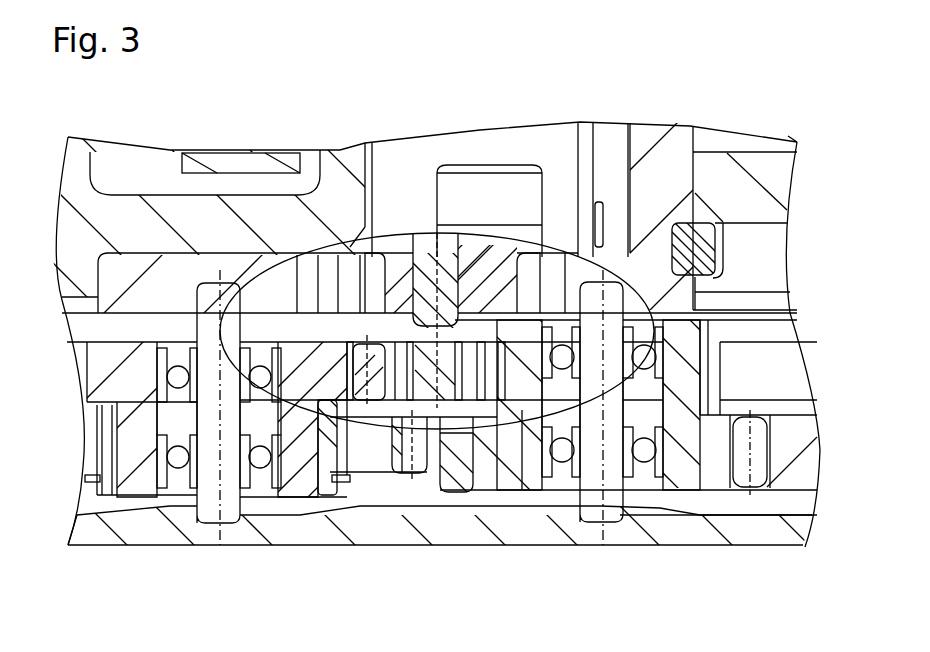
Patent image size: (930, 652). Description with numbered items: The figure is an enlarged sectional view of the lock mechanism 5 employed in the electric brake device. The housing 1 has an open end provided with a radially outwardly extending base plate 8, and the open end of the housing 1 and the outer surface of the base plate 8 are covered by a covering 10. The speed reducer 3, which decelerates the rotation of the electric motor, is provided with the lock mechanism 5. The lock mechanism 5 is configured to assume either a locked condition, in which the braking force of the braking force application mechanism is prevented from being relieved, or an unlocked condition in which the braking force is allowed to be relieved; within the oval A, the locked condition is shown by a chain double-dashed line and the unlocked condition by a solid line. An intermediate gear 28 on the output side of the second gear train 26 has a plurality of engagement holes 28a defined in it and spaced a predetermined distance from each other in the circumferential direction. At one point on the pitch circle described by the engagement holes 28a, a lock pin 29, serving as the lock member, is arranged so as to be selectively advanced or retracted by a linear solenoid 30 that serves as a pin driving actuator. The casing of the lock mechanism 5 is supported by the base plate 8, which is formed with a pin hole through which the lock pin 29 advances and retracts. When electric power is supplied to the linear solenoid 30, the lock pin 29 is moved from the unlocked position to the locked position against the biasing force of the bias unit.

The housing 1 is at (648, 165).
The speed reducer 3 is at (372, 495).
The lock mechanism 5 is at (312, 478).
The base plate 8 is at (145, 298).
The covering 10 is at (698, 532).
The second gear train 26 is at (403, 412).
The intermediate gear 28 is at (352, 368).
The engagement holes 28a is at (420, 400).
The lock pin 29 is at (428, 250).
The linear solenoid 30 is at (500, 140).
The oval A is at (505, 405).